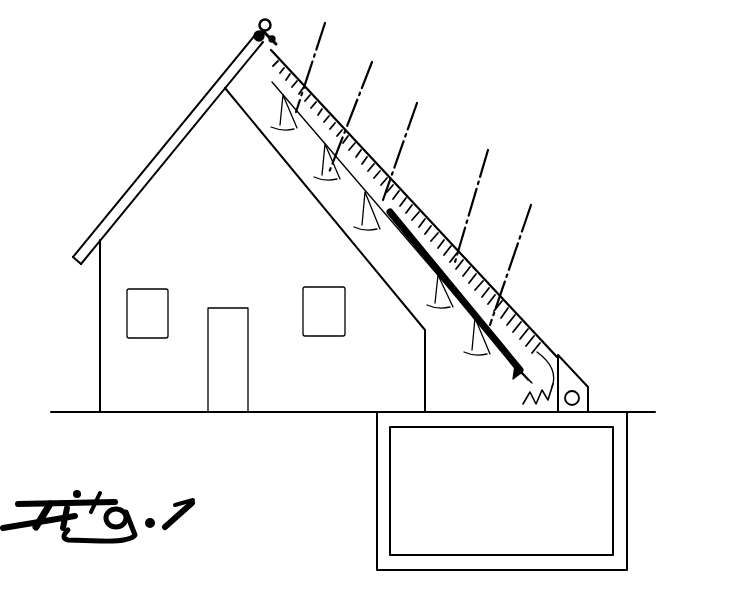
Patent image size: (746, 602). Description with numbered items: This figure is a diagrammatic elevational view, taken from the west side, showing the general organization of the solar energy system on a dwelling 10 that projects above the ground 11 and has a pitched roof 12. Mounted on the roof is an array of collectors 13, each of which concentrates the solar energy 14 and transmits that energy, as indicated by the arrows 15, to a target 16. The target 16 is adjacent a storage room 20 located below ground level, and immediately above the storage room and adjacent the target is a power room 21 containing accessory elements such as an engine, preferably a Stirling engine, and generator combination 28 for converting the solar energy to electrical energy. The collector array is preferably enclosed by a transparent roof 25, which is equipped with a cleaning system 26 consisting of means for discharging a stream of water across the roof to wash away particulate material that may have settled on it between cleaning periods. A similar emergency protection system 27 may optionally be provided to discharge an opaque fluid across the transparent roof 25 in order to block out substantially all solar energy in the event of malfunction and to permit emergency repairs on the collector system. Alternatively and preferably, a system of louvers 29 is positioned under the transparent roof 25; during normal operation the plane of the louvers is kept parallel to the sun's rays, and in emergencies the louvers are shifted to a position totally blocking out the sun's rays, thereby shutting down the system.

The dwelling 10 is at (134, 259).
The ground 11 is at (655, 411).
The pitched roof 12 is at (242, 107).
The collectors 13 is at (323, 189).
The solar energy 14 is at (368, 85).
The arrows 15 is at (512, 305).
The target 16 is at (524, 392).
The storage room 20 is at (636, 473).
The power room 21 is at (573, 380).
The transparent roof 25 is at (414, 200).
The cleaning system 26 is at (255, 30).
The emergency protection system 27 is at (272, 21).
The engine and generator combination 28 is at (584, 398).
The louvers 29 is at (420, 232).